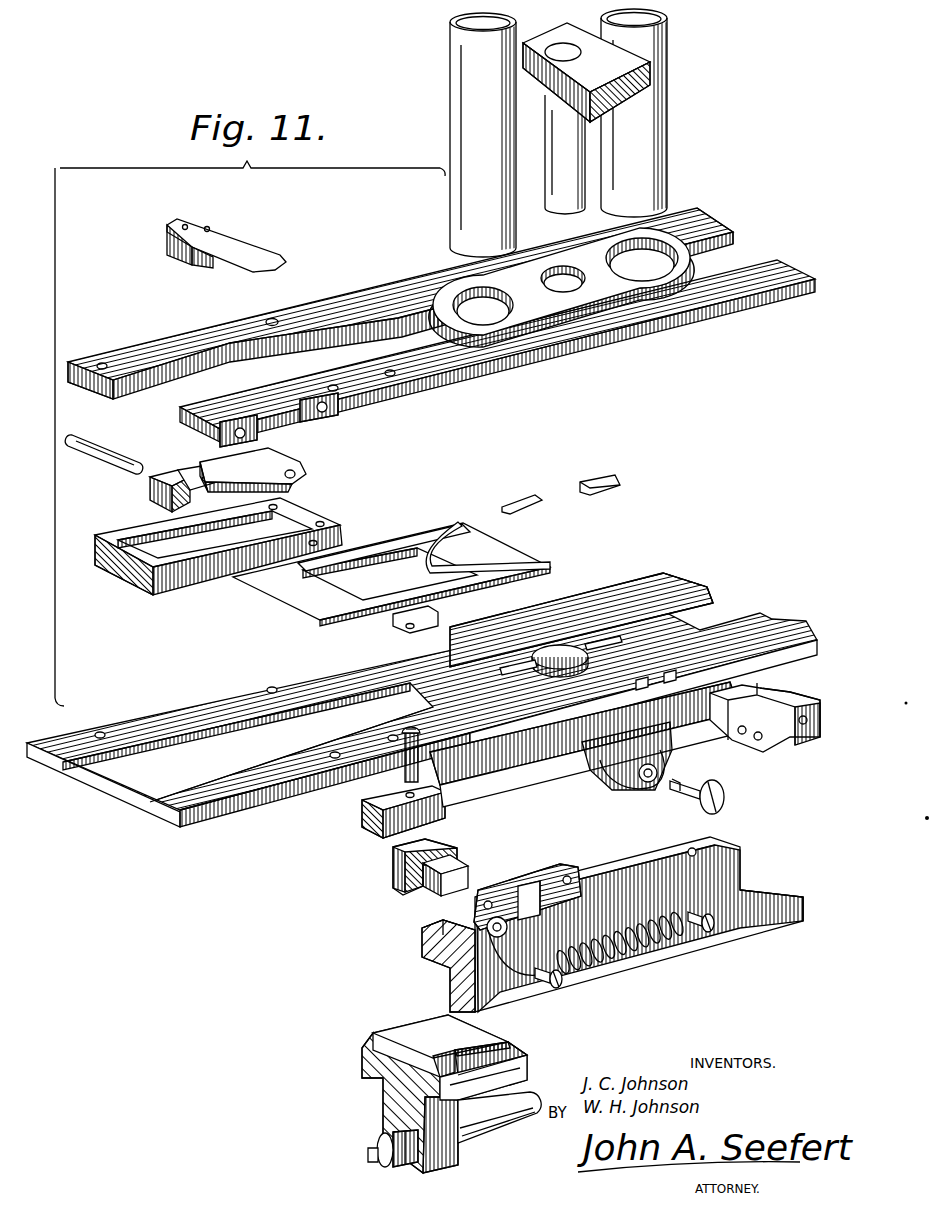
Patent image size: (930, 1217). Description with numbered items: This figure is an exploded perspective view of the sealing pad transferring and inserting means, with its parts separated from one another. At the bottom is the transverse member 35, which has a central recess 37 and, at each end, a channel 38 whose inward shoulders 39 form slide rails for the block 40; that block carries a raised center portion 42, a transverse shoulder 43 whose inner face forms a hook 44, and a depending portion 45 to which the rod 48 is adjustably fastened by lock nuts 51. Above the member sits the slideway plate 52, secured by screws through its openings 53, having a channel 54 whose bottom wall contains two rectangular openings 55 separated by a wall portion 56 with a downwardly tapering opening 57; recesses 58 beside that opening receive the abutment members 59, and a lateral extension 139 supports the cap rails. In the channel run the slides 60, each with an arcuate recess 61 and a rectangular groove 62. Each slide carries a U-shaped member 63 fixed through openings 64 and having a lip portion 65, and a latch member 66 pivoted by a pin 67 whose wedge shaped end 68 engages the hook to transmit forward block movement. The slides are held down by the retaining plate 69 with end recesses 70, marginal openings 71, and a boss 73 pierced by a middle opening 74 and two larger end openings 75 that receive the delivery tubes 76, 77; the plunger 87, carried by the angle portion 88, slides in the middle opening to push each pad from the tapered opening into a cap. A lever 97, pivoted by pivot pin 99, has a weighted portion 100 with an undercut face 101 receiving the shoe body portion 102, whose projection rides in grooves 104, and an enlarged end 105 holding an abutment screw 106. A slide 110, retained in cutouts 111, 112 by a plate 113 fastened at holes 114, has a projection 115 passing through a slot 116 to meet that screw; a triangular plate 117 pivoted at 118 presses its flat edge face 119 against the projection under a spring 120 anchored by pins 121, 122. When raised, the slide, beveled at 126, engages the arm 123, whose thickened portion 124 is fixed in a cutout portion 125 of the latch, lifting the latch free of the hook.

The transverse member 35 is at (770, 948).
The recess 37 is at (790, 928).
The channel 38 is at (452, 976).
The shoulders 39 is at (420, 930).
The block 40 is at (527, 1068).
The raised center portion 42 is at (510, 1044).
The transverse shoulder 43 is at (378, 1031).
The hook 44 is at (470, 1047).
The depending portion 45 is at (372, 1096).
The rod 48 is at (504, 1130).
The lock nuts 51 is at (378, 1140).
The plate 52 is at (70, 732).
The openings 53 is at (104, 732).
The channel 54 is at (82, 772).
The rectangular openings 55 is at (716, 604).
The wall portion 56 is at (642, 622).
The opening 57 is at (566, 648).
The recesses 58 is at (604, 640).
The abutment members 59 is at (582, 484).
The slides 60 is at (426, 530).
The recess 61 is at (472, 549).
The rectangular groove 62 is at (378, 560).
The U-shaped member 63 is at (207, 575).
The openings 64 is at (322, 522).
The lip portion 65 is at (163, 596).
The latch member 66 is at (282, 460).
The pin 67 is at (114, 447).
The wedge shaped end 68 is at (148, 490).
The plate 69 is at (368, 296).
The rectangular recesses 70 is at (736, 240).
The openings 71 is at (104, 361).
The boss 73 is at (455, 275).
The middle opening 74 is at (578, 288).
The end openings 75 is at (510, 313).
The delivery tube 76 is at (450, 70).
The delivery tube 77 is at (668, 84).
The plunger 87 is at (556, 198).
The angle portion 88 is at (565, 42).
The lever 97 is at (568, 770).
The pivot pin 99 is at (718, 794).
The weighted portion 100 is at (776, 758).
The undercut face 101 is at (780, 738).
The shoe body portion 102 is at (786, 692).
The grooves 104 is at (642, 690).
The enlarged end 105 is at (372, 835).
The screw 106 is at (420, 762).
The slide 110 is at (430, 866).
The cutout 111 is at (283, 792).
The cutout 112 is at (300, 427).
The plate 113 is at (568, 874).
The holes 114 is at (222, 442).
The projection 115 is at (468, 876).
The slot 116 is at (530, 884).
The triangular plate 117 is at (545, 950).
The pivot 118 is at (486, 908).
The flat edge face 119 is at (542, 905).
The spring 120 is at (612, 968).
The pin 121 is at (570, 988).
The pin 122 is at (712, 932).
The arm 123 is at (240, 242).
The thickened portion 124 is at (178, 250).
The cutout portion 125 is at (200, 470).
The bevel 126 is at (396, 855).
The lateral extension 139 is at (393, 622).